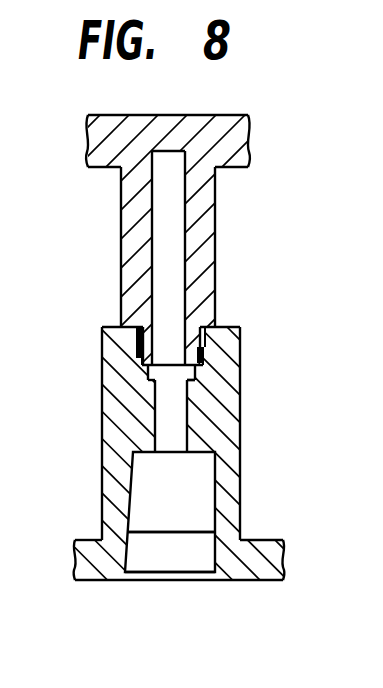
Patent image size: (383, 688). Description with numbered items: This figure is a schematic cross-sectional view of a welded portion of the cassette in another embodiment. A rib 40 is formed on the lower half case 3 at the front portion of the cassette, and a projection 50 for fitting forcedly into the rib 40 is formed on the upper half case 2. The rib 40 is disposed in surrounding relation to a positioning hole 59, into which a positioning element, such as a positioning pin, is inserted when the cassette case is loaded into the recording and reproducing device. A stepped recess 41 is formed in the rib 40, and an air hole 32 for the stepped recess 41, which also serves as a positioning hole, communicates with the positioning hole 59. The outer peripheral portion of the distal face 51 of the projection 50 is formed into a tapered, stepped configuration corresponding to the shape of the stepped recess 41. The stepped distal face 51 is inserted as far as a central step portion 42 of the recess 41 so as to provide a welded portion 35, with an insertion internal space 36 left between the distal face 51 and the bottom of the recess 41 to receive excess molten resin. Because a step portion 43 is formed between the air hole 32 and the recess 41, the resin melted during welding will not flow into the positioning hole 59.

The upper half case 2 is at (88, 134).
The projection 50 is at (121, 233).
The distal face 51 is at (141, 347).
The stepped recess 41 is at (138, 353).
The central step portion 42 is at (140, 355).
The step portion 43 is at (152, 377).
The rib 40 is at (102, 433).
The air hole 32 is at (150, 440).
The welded portion 35 is at (222, 358).
The insertion internal space 36 is at (196, 379).
The lower half case 3 is at (255, 549).
The positioning hole 59 is at (215, 545).